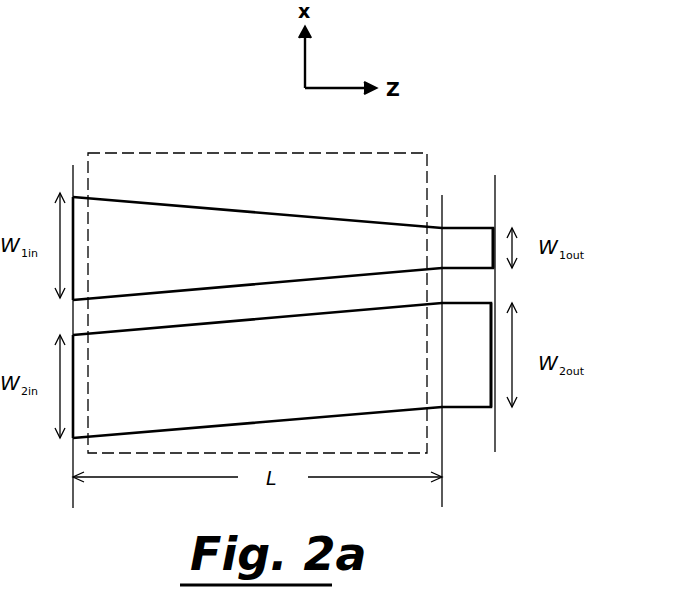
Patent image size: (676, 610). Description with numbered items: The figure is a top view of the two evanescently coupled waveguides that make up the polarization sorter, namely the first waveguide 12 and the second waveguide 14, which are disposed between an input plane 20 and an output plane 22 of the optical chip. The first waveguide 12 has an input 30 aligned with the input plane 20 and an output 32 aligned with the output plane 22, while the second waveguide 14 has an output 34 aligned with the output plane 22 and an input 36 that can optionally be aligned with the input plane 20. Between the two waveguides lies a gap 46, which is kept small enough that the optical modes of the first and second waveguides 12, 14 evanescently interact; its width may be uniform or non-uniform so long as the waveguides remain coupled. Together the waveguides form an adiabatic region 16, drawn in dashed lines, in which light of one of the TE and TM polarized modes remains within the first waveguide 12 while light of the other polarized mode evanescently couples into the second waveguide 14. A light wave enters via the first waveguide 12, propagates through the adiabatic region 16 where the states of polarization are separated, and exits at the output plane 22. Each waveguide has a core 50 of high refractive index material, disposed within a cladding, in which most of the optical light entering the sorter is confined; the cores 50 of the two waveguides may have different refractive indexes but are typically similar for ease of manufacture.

The first waveguide 12 is at (212, 205).
The second waveguide 14 is at (298, 422).
The adiabatic region 16 is at (164, 152).
The input plane 20 is at (72, 489).
The output plane 22 is at (496, 436).
The input 30 is at (71, 196).
The output 32 is at (492, 222).
The output 34 is at (491, 310).
The input 36 is at (80, 343).
The gap 46 is at (250, 297).
The core 50 is at (365, 230).